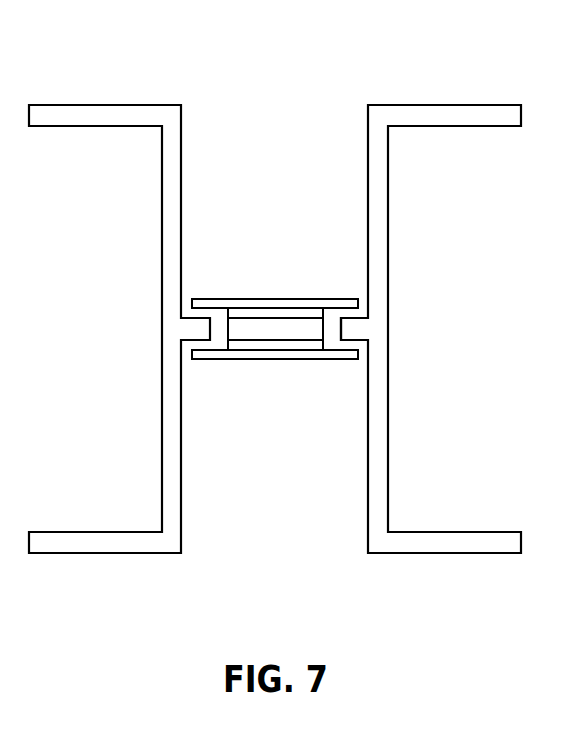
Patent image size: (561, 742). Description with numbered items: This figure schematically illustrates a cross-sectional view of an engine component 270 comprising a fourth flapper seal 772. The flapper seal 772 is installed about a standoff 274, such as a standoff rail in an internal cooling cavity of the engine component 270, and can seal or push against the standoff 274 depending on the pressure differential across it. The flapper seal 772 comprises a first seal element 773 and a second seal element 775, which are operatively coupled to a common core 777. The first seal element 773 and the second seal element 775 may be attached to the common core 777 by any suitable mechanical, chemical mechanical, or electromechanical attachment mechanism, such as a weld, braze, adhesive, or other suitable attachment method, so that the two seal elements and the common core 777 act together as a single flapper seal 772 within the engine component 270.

The engine component 270 is at (439, 105).
The standoff 274 is at (357, 330).
The second seal element 775 is at (268, 299).
The flapper seal 772 is at (313, 359).
The first seal element 773 is at (272, 359).
The common core 777 is at (247, 330).